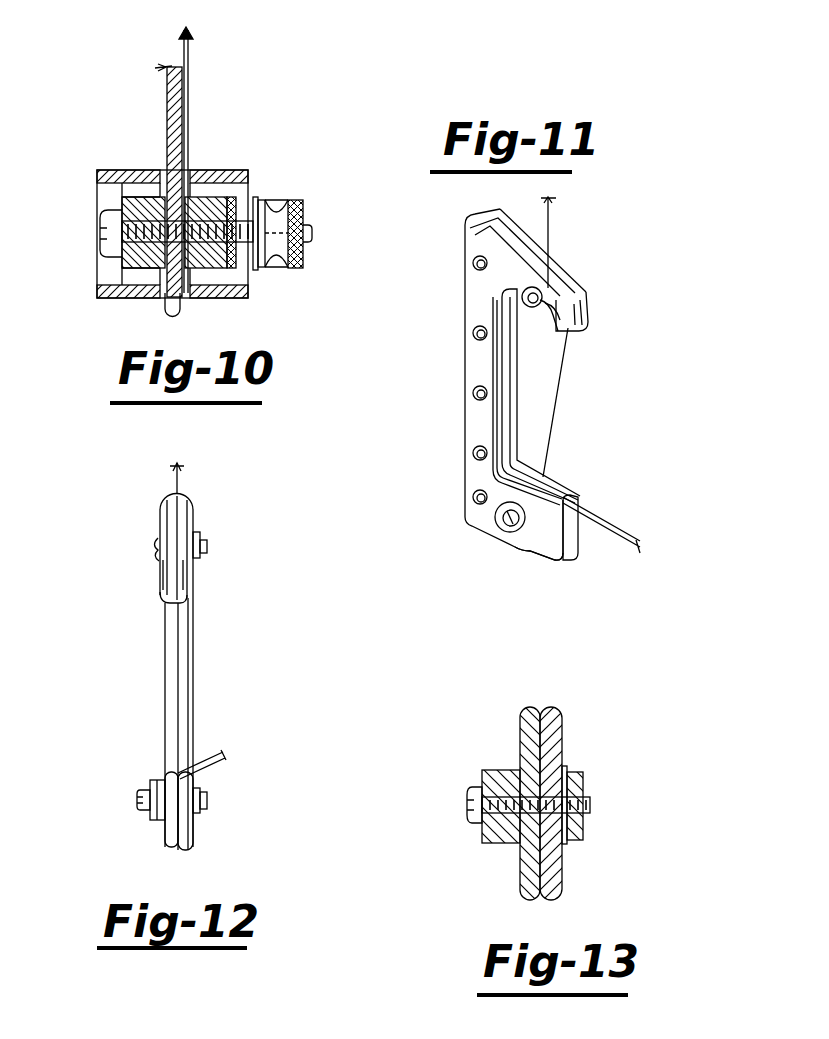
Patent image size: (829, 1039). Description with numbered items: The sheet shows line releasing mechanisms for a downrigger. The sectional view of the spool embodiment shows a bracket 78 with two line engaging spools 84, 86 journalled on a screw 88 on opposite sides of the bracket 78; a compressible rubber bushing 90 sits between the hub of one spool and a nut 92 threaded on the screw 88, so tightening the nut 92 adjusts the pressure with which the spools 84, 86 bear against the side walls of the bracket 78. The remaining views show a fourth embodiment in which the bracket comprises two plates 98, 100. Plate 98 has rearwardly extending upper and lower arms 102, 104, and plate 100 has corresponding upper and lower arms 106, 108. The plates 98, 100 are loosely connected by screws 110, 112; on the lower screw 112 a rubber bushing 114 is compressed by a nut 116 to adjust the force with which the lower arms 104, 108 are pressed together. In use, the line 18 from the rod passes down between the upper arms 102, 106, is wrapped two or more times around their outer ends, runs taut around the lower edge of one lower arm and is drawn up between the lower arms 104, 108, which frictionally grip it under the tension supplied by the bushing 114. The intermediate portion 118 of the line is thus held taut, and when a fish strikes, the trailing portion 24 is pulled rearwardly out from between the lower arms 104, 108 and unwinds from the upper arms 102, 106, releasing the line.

In FIG. 10, the line 18 is at (186, 160).
In FIG. 11, the line 18 is at (549, 233).
In FIG. 12, the line 18 is at (182, 483).
In FIG. 11, the trailing portion of the line 24 is at (625, 531).
In FIG. 12, the trailing portion of the line 24 is at (211, 762).
In FIG. 10, the bracket 78 is at (173, 86).
In FIG. 10, the spool 84 is at (217, 300).
In FIG. 10, the spool 86 is at (135, 290).
In FIG. 10, the screw 88 is at (105, 246).
In FIG. 10, the compressible rubber bushing 90 is at (243, 202).
In FIG. 10, the nut 92 is at (290, 198).
In FIG. 11, the plate 98 is at (475, 240).
In FIG. 12, the plate 98 is at (166, 684).
In FIG. 11, the plate 100 is at (502, 218).
In FIG. 12, the plate 100 is at (186, 690).
In FIG. 11, the upper arm 102 is at (558, 333).
In FIG. 12, the upper arm 102 is at (163, 586).
In FIG. 11, the lower arm 104 is at (540, 553).
In FIG. 12, the lower arm 104 is at (170, 833).
In FIG. 13, the lower arm 104 is at (527, 710).
In FIG. 11, the upper arm 106 is at (586, 304).
In FIG. 12, the upper arm 106 is at (184, 520).
In FIG. 11, the lower arm 108 is at (578, 546).
In FIG. 12, the lower arm 108 is at (181, 836).
In FIG. 13, the lower arm 108 is at (550, 708).
In FIG. 11, the screw 110 is at (519, 298).
In FIG. 12, the screw 110 is at (157, 541).
In FIG. 11, the screw 112 is at (507, 532).
In FIG. 12, the screw 112 is at (140, 801).
In FIG. 13, the screw 112 is at (476, 822).
In FIG. 12, the rubber bushing 114 is at (160, 781).
In FIG. 13, the rubber bushing 114 is at (512, 843).
In FIG. 12, the nut 116 is at (201, 796).
In FIG. 13, the nut 116 is at (581, 781).
In FIG. 11, the intermediate portion of the line 118 is at (557, 421).
In FIG. 12, the intermediate portion of the line 118 is at (194, 645).